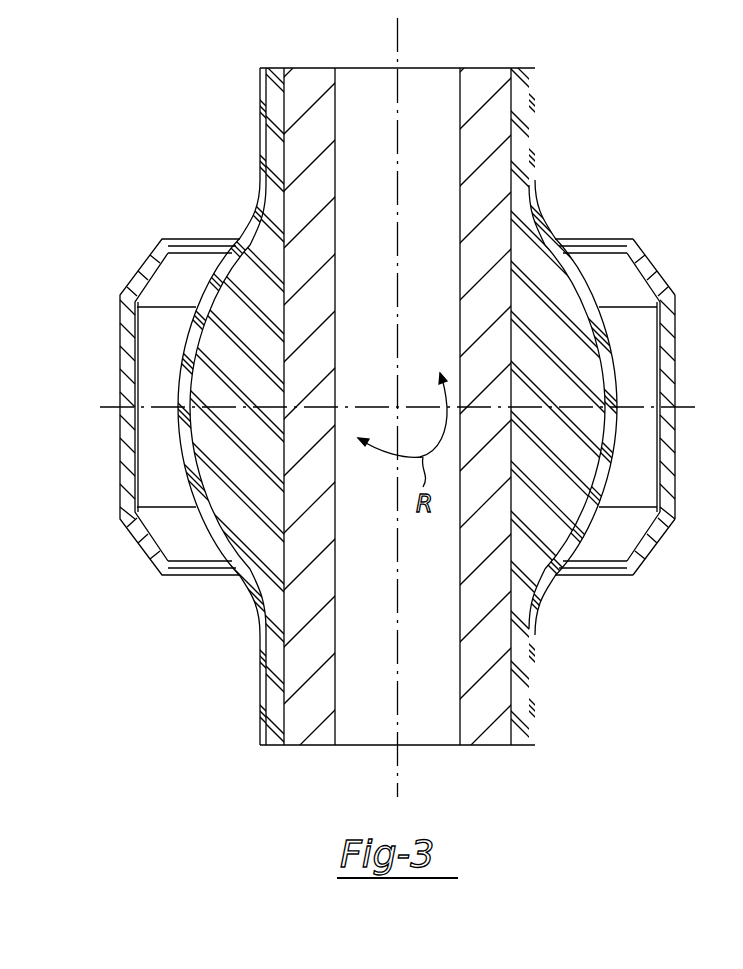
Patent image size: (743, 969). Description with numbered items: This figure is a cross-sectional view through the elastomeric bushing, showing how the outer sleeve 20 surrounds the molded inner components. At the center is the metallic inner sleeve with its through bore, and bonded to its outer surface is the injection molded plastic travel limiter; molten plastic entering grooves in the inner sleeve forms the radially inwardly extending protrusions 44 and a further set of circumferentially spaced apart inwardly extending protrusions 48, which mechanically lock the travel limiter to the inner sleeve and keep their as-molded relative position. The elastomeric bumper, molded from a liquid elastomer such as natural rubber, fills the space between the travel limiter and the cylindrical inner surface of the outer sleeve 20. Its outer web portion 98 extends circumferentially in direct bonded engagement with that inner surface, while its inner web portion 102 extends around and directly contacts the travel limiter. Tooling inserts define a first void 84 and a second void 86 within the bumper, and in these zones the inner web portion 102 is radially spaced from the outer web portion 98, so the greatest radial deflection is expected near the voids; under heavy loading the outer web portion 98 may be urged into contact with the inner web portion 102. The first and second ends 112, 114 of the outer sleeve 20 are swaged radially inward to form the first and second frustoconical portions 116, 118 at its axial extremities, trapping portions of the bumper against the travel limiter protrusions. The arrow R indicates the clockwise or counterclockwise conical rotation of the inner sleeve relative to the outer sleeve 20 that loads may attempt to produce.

The outer sleeve 20 is at (649, 397).
The radially inwardly extending protrusions 44 is at (286, 171).
The circumferentially spaced apart inwardly extending protrusions 48 is at (290, 614).
The first void 84 is at (163, 384).
The second void 86 is at (670, 360).
The outer web portion 98 is at (658, 318).
The inner web portion 102 is at (607, 440).
The first end 112 is at (630, 235).
The second end 114 is at (611, 594).
The first frustoconical portion 116 is at (645, 270).
The second frustoconical portion 118 is at (664, 527).